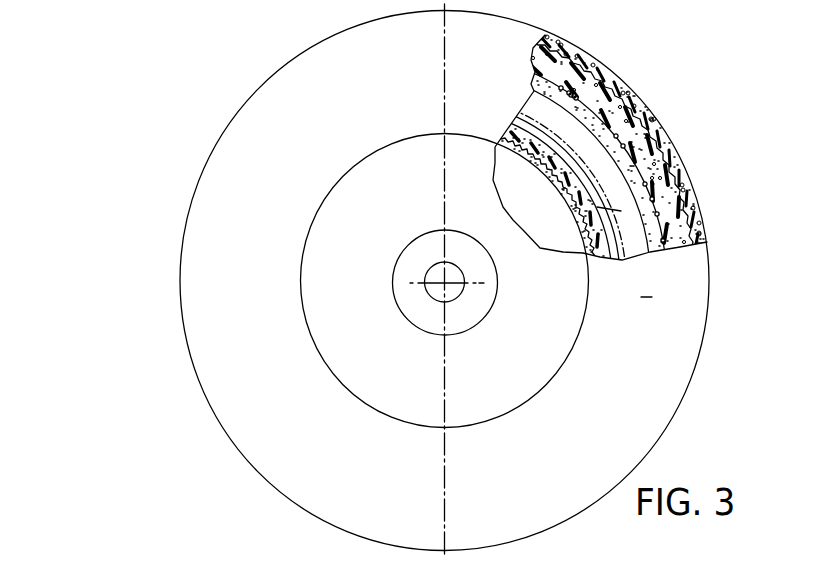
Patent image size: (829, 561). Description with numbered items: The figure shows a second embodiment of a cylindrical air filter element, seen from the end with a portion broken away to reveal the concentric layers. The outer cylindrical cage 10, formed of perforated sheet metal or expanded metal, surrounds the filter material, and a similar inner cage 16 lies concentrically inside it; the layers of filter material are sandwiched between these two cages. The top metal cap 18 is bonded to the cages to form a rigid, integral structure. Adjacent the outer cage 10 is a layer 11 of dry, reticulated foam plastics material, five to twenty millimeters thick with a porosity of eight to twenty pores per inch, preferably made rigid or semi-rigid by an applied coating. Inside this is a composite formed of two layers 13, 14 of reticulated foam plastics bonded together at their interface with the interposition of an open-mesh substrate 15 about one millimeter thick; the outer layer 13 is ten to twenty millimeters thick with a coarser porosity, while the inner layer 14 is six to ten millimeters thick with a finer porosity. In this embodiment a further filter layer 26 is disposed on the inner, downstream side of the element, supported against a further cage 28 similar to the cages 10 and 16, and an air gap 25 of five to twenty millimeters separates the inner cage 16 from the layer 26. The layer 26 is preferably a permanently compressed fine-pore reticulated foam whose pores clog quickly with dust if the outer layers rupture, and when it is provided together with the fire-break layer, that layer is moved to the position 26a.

The outer cylindrical cage 10 is at (603, 70).
The layer of dry reticulated foam plastics material 11 is at (623, 103).
The outer layer of reticulated foam plastics 13 is at (644, 155).
The inner layer of reticulated foam plastics 14 is at (617, 152).
The open-mesh substrate 15 is at (647, 119).
The inner cage 16 is at (594, 139).
The top metal cap 18 is at (690, 293).
The air gap 25 is at (580, 227).
The further filter layer 26 is at (507, 131).
The fire-break layer 26a is at (618, 256).
The further cage 28 is at (547, 174).